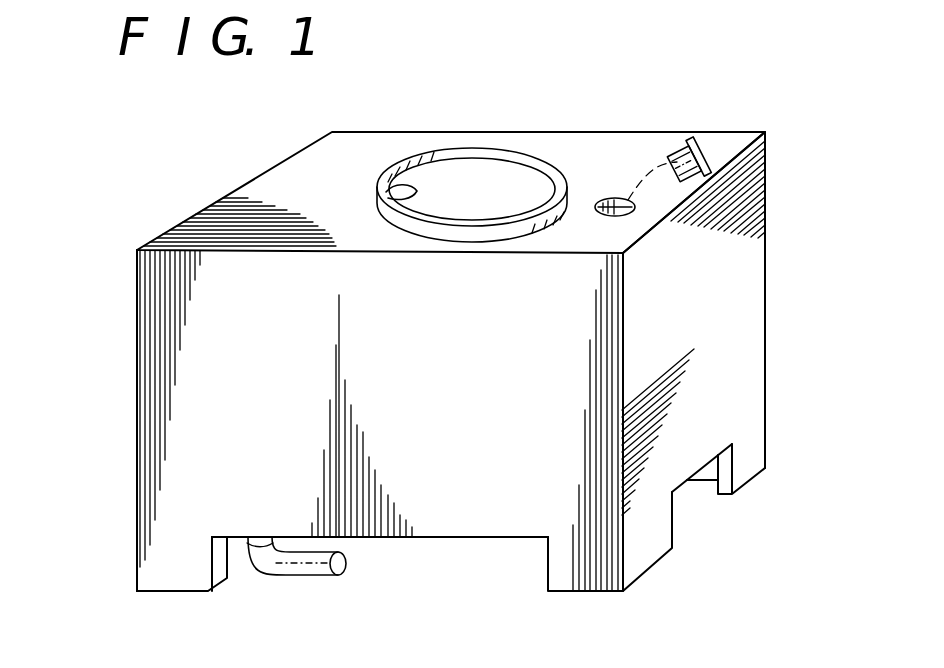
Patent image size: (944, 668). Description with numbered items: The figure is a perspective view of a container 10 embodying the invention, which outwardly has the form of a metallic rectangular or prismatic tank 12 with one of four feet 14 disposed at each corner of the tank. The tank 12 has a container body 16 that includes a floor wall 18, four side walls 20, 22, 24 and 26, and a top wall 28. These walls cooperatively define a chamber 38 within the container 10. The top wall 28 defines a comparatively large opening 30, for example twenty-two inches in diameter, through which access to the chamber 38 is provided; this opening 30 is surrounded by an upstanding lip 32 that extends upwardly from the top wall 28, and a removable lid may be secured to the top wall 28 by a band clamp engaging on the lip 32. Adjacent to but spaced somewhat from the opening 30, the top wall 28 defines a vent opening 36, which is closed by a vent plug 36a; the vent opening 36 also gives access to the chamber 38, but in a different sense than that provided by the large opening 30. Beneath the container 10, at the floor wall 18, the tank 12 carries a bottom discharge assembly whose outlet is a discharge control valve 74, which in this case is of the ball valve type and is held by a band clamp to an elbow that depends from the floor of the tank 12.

The container 10 is at (626, 128).
The tank 12 is at (752, 266).
The feet 14 is at (172, 567).
The container body 16 is at (722, 318).
The floor wall 18 is at (432, 539).
The side wall 20 is at (717, 369).
The side wall 22 is at (449, 422).
The side wall 24 is at (133, 423).
The side wall 26 is at (497, 128).
The top wall 28 is at (366, 178).
The opening 30 is at (396, 193).
The upstanding lip 32 is at (437, 147).
The vent opening 36 is at (609, 214).
The vent plug 36a is at (706, 144).
The chamber 38 is at (494, 218).
The discharge control valve 74 is at (296, 586).